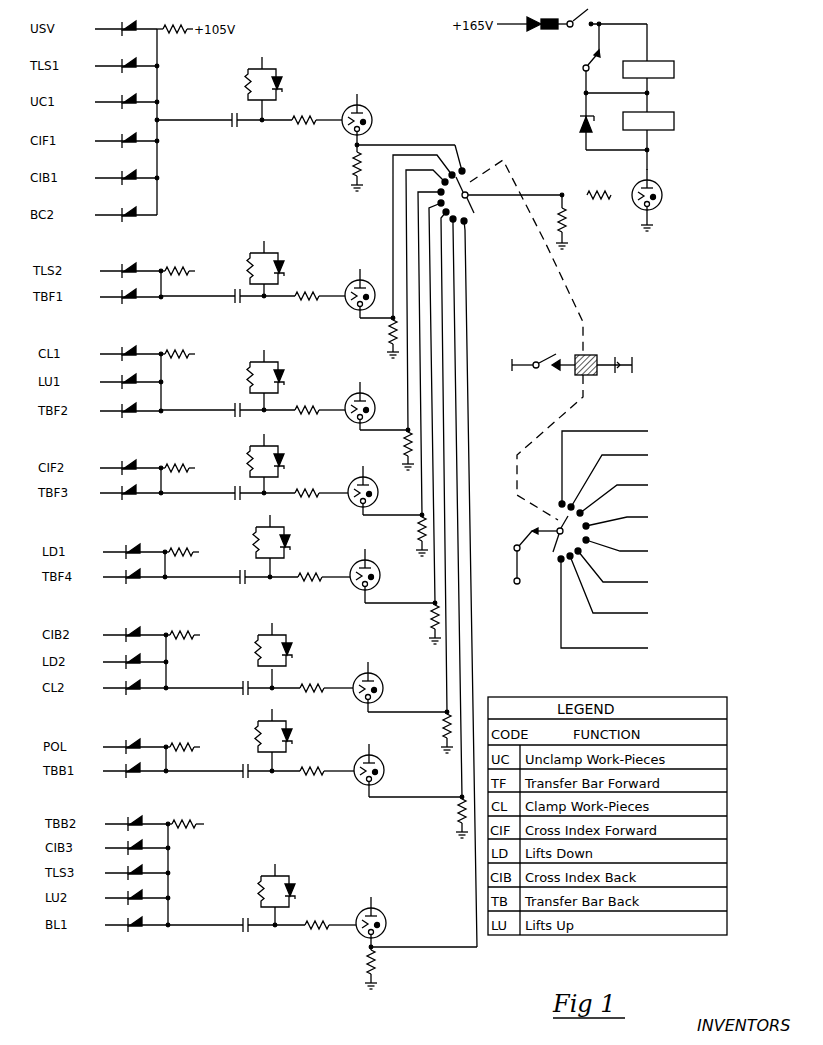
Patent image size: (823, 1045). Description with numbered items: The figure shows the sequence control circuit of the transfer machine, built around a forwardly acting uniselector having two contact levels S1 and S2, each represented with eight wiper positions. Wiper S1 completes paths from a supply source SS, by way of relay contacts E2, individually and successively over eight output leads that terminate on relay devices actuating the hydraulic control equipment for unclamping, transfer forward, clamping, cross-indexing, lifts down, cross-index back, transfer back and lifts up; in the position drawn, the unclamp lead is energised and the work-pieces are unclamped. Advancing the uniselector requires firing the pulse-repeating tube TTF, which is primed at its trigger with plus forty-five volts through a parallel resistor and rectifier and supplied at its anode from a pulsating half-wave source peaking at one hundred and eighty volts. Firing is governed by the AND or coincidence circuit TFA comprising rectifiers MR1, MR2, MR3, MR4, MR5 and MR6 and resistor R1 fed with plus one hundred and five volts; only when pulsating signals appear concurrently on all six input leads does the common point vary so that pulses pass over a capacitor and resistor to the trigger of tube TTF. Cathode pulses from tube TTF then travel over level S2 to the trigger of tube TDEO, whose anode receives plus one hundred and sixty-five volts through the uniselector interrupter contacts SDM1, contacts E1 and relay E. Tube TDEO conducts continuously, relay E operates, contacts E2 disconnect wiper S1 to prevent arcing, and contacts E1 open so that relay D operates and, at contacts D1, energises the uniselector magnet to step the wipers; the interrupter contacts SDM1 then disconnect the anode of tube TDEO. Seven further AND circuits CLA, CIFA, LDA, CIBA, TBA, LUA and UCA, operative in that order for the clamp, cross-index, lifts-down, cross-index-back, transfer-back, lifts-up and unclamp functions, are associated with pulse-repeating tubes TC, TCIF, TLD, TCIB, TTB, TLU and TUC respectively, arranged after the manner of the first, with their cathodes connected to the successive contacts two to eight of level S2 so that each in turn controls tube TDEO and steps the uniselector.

The rectifier MR1 is at (126, 20).
The rectifier MR2 is at (126, 57).
The rectifier MR3 is at (126, 93).
The rectifier MR4 is at (126, 132).
The rectifier MR5 is at (126, 169).
The rectifier MR6 is at (126, 206).
The resistor R1 is at (175, 20).
The AND circuit TFA is at (193, 122).
The clamp AND circuit CLA is at (169, 275).
The cross-index AND circuit CIFA is at (169, 374).
The lifts-down AND circuit LDA is at (169, 473).
The cross-index-back AND circuit CIBA is at (172, 556).
The transfer-back AND circuit TBA is at (173, 653).
The lifts-up AND circuit LUA is at (173, 751).
The unclamp AND circuit UCA is at (176, 866).
The pulse-repeating tube TTF is at (347, 114).
The pulse-repeating tube TC is at (280, 291).
The pulse-repeating tube TCIF is at (287, 401).
The pulse-repeating tube TLD is at (294, 489).
The pulse-repeating tube TCIB is at (303, 572).
The pulse-repeating tube TTB is at (309, 680).
The pulse-repeating tube TLU is at (317, 767).
The pulse-repeating tube TUC is at (322, 916).
The tube TDEO is at (626, 136).
The uniselector wiper S1 is at (605, 540).
The uniselector wiper S2 is at (477, 551).
The uniselector interrupter contacts SDM1 is at (648, 397).
The relay contacts E1 is at (601, 87).
The relay contacts E2 is at (692, 121).
The relay contacts D1 is at (692, 69).
The supply source SS is at (512, 591).